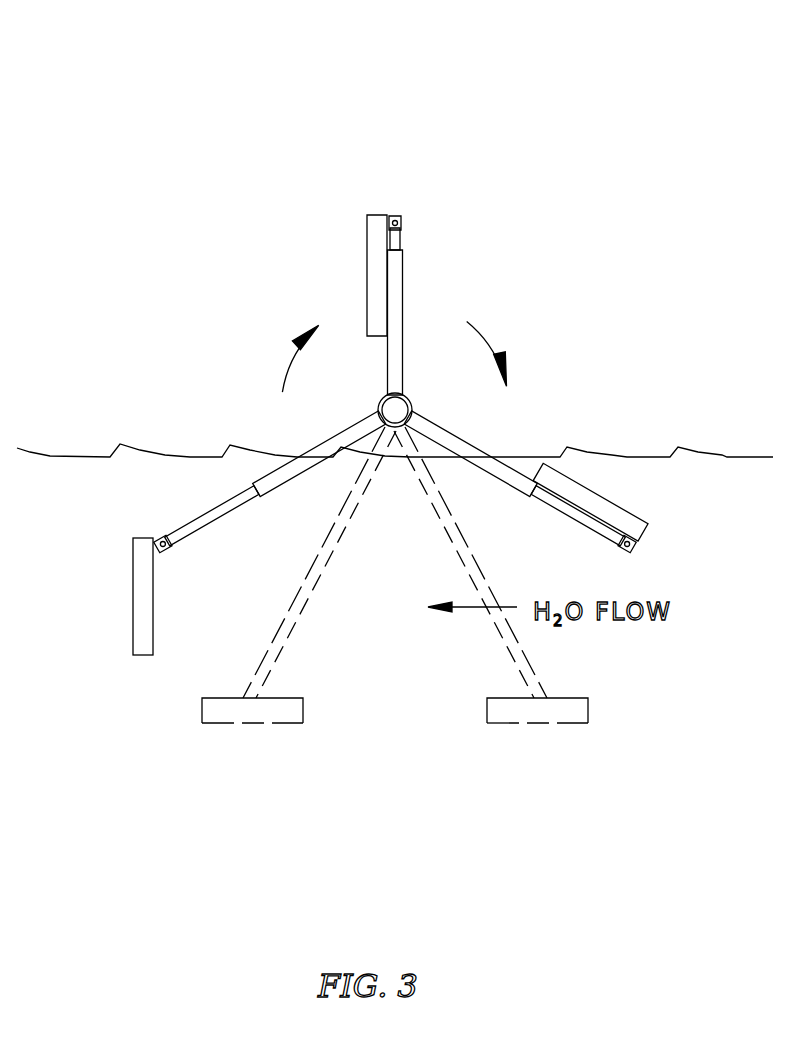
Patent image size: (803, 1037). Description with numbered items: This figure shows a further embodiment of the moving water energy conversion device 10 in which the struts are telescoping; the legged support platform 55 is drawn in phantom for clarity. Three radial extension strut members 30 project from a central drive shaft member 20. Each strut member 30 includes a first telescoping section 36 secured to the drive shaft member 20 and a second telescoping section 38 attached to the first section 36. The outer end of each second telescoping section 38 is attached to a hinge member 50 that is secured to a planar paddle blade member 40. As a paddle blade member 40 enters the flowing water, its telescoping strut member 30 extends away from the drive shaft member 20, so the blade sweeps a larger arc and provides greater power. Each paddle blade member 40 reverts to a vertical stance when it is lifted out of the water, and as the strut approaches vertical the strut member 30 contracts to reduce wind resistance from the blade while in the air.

The moving water energy conversion device 10 is at (575, 195).
The drive shaft member 20 is at (433, 396).
The radial extension strut member 30 is at (370, 403).
The first telescoping section 36 is at (395, 371).
The second telescoping section 38 is at (376, 389).
The paddle blade member 40 is at (593, 397).
The hinge member 50 is at (396, 375).
The legged support platform 55 is at (395, 575).